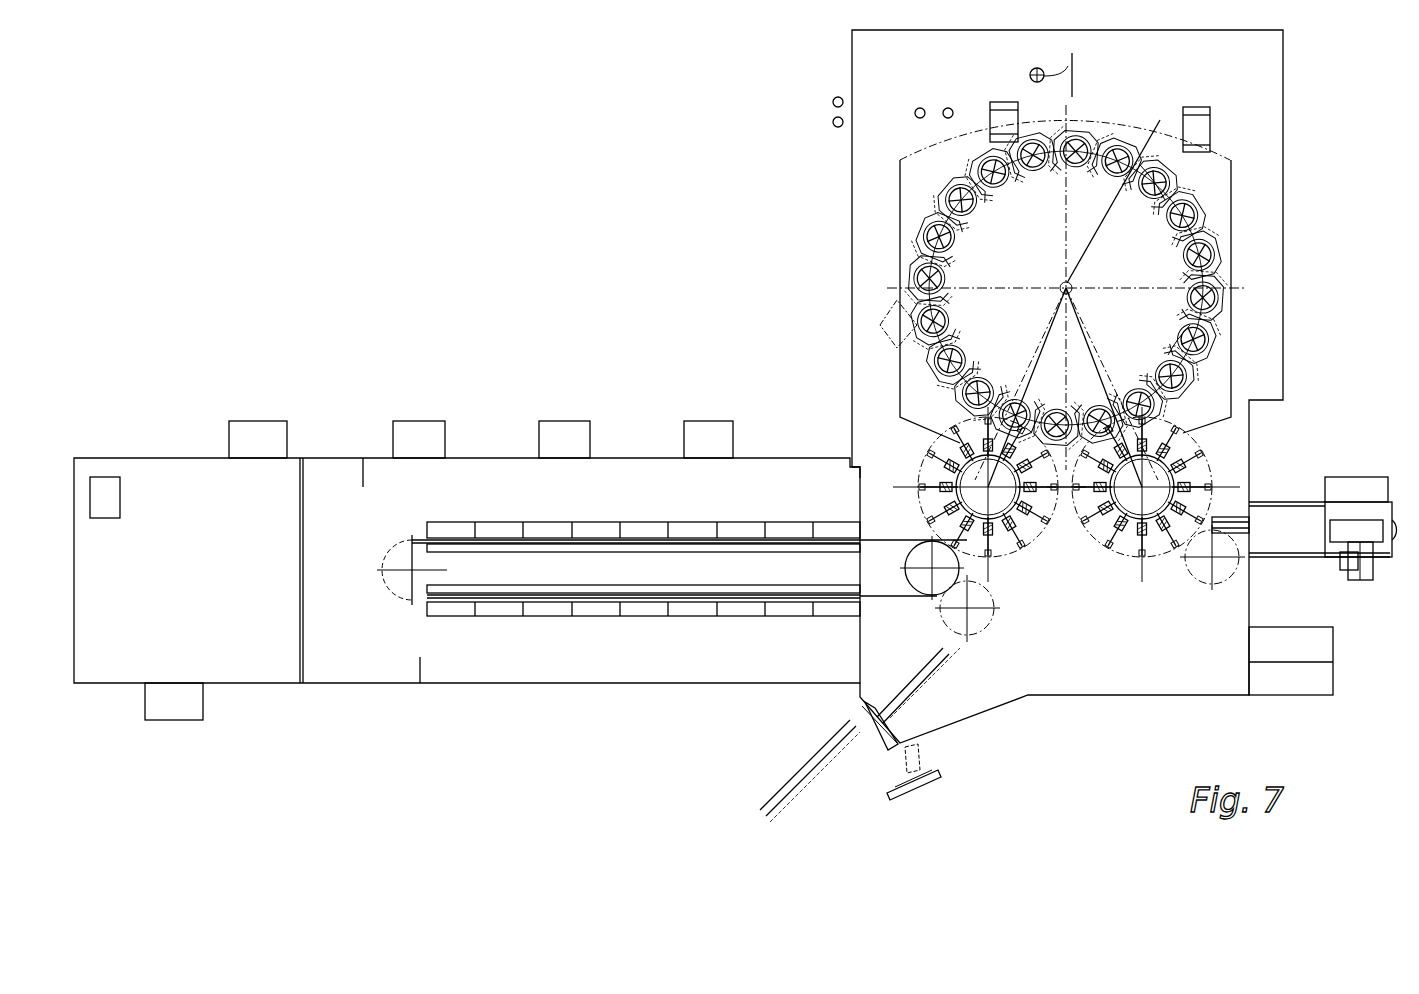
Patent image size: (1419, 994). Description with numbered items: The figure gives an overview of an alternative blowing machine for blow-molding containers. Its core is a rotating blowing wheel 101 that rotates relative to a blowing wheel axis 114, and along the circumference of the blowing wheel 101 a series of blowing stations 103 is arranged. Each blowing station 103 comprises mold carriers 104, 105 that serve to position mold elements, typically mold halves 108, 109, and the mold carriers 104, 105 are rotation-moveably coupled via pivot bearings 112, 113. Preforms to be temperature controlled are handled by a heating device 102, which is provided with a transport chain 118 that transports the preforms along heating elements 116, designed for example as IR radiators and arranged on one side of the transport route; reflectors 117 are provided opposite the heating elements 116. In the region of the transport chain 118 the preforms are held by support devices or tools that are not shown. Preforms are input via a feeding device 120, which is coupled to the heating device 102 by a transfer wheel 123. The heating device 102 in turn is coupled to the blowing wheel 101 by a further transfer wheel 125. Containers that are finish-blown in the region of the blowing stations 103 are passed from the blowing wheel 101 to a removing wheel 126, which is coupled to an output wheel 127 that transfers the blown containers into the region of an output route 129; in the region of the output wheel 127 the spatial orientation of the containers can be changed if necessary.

The blowing wheel 101 is at (987, 250).
The heating device 102 is at (525, 570).
The blowing station 103 is at (1198, 210).
The mold carrier 104 is at (1203, 277).
The mold carrier 105 is at (1213, 313).
The mold half 108 is at (1203, 337).
The mold half 109 is at (1203, 350).
The pivot bearing 112 is at (1177, 193).
The pivot bearing 113 is at (1177, 180).
The blowing wheel axis 114 is at (1160, 120).
The heating element 116 is at (657, 528).
The reflector 117 is at (605, 588).
The transport chain 118 is at (790, 540).
The feeding device 120 is at (832, 772).
The transfer wheel 123 is at (998, 618).
The transfer wheel 125 is at (930, 440).
The removing wheel 126 is at (1212, 468).
The output wheel 127 is at (1225, 577).
The output route 129 is at (1307, 552).